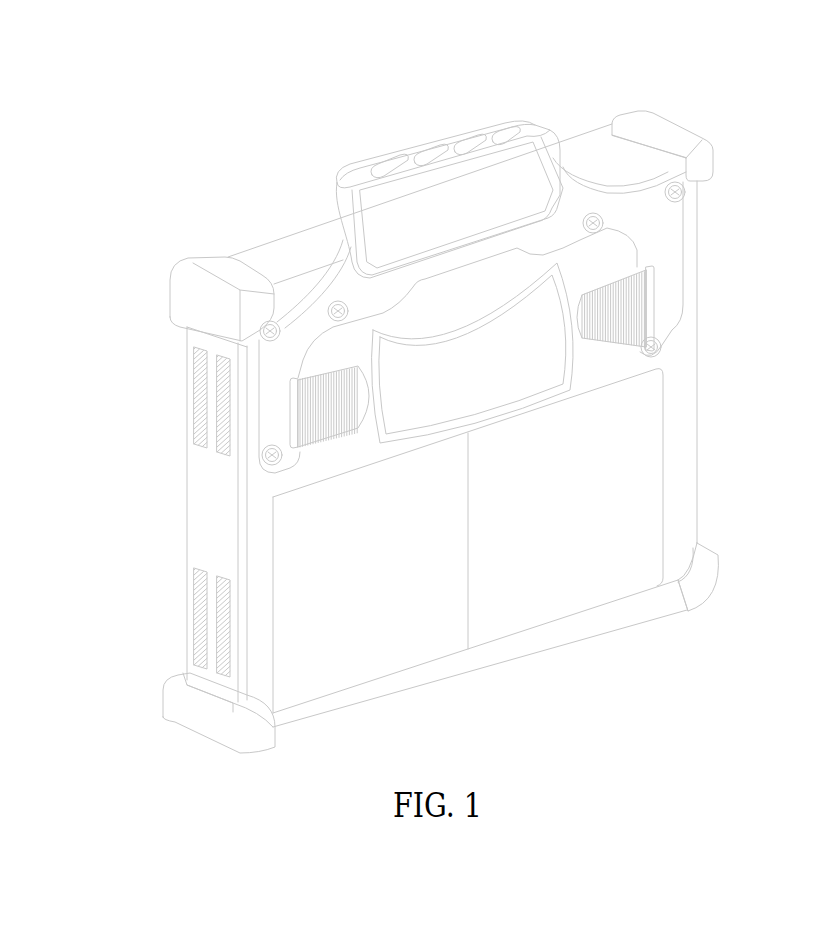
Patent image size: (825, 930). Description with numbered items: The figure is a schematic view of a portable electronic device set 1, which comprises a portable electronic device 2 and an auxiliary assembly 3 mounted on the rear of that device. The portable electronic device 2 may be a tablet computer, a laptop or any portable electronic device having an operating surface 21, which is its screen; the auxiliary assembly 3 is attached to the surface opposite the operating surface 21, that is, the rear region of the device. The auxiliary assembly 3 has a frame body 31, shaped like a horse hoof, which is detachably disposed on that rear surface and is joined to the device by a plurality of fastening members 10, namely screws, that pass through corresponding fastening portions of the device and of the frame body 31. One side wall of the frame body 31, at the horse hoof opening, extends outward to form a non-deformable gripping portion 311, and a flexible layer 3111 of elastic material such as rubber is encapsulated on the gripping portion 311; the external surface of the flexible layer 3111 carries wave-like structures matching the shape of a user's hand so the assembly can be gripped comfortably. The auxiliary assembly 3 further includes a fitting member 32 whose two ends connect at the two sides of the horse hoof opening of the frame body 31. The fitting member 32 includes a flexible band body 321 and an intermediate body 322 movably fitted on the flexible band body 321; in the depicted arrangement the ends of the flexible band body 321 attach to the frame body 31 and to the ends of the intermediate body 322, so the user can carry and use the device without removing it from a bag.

The portable electronic device set 1 is at (168, 110).
The portable electronic device 2 is at (195, 527).
The operating surface 21 is at (303, 238).
The auxiliary assembly 3 is at (553, 125).
The fastening member 10 is at (330, 305).
The frame body 31 is at (275, 367).
The gripping portion 311 is at (555, 148).
The flexible layer 3111 is at (437, 133).
The fitting member 32 is at (646, 310).
The flexible band body 321 is at (630, 295).
The intermediate body 322 is at (548, 357).